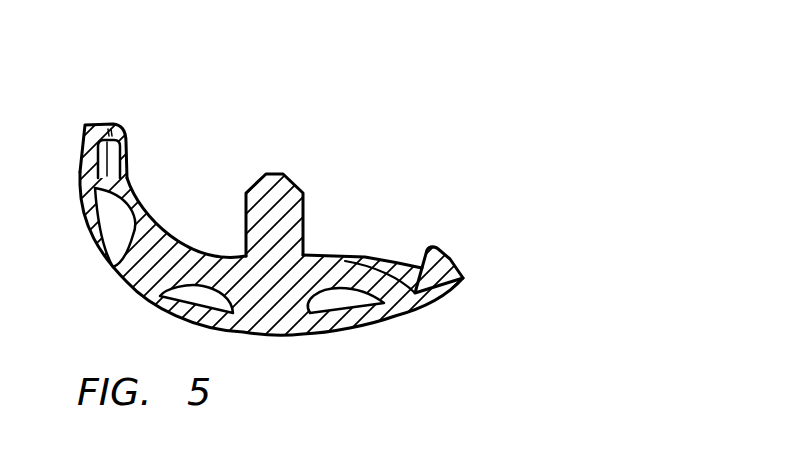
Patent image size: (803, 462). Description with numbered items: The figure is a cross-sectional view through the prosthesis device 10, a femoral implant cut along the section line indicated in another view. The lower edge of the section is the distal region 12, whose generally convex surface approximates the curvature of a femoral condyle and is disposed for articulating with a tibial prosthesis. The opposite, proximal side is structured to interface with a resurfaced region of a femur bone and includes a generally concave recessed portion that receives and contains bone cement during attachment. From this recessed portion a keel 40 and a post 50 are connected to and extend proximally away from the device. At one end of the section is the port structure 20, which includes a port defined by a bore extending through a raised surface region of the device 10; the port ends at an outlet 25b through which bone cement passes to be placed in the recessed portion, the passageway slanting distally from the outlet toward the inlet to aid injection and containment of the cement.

The prosthesis device 10 is at (385, 118).
The distal region 12 is at (307, 335).
The port structure 20 is at (440, 244).
The outlet 25b is at (420, 268).
The keel 40 is at (150, 207).
The post 50 is at (285, 196).